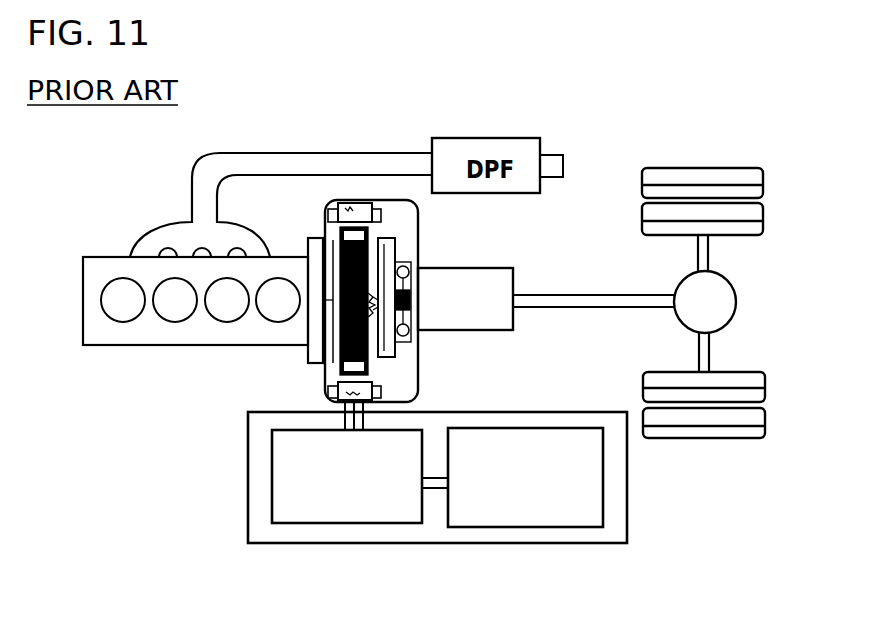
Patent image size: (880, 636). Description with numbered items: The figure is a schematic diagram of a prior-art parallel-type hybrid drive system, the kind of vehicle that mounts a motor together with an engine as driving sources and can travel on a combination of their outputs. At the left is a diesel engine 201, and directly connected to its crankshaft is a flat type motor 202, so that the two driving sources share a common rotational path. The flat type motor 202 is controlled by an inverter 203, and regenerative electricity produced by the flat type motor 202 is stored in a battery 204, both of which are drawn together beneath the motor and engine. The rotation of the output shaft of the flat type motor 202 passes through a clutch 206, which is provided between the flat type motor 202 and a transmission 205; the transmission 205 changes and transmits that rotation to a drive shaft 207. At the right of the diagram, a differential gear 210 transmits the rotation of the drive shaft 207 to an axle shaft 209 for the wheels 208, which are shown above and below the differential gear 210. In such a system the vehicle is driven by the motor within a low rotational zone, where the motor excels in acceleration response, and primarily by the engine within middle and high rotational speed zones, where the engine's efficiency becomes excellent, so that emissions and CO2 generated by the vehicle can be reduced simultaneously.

The diesel engine 201 is at (103, 345).
The flat type motor 202 is at (366, 203).
The inverter 203 is at (297, 517).
The battery 204 is at (497, 515).
The transmission 205 is at (500, 268).
The clutch 206 is at (390, 258).
The drive shaft 207 is at (587, 295).
The wheels 208 is at (760, 211).
The axle shaft 209 is at (710, 248).
The differential gear 210 is at (730, 311).